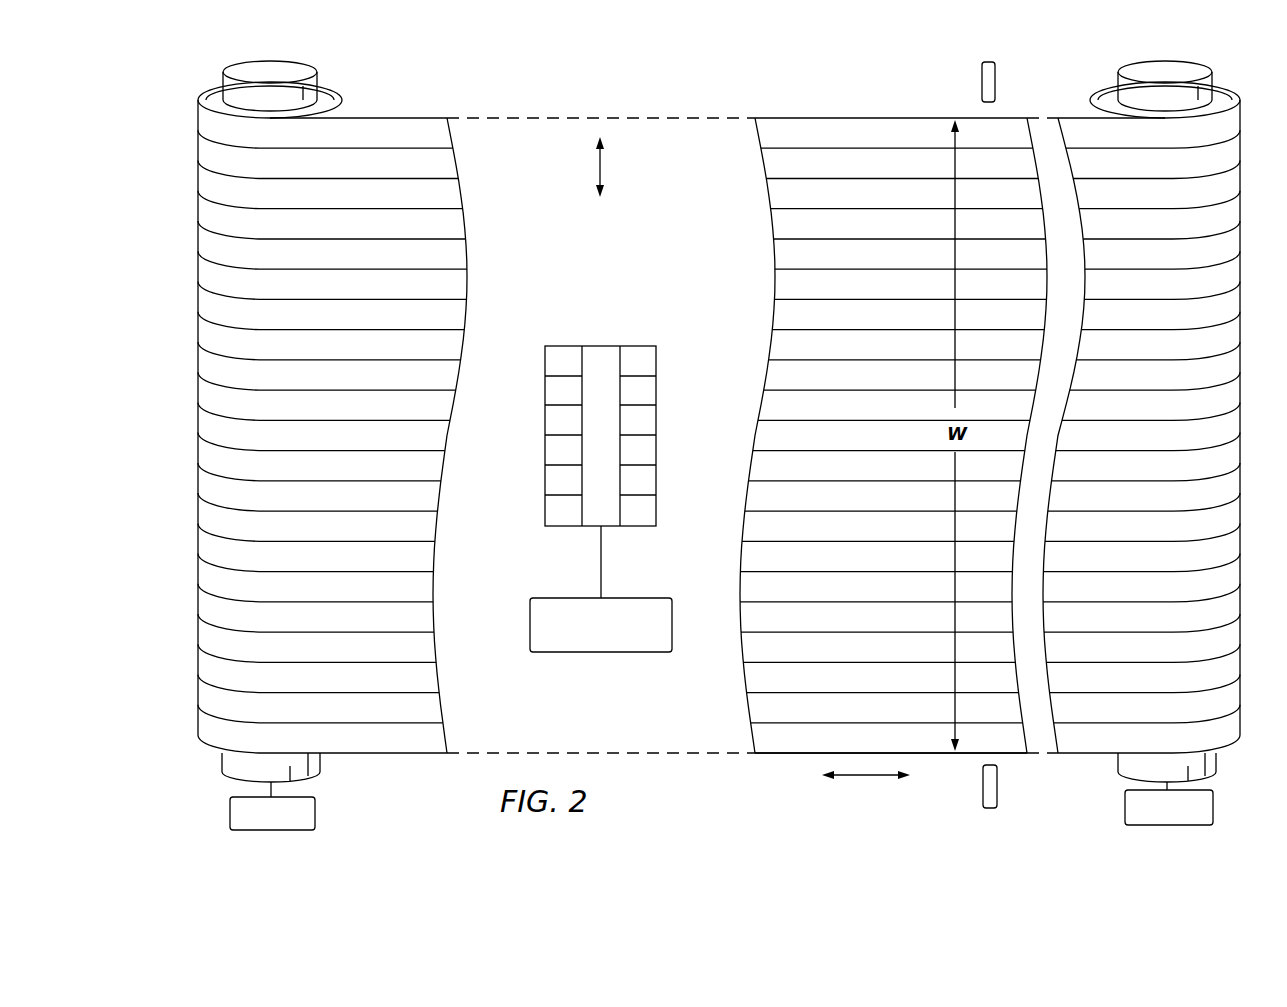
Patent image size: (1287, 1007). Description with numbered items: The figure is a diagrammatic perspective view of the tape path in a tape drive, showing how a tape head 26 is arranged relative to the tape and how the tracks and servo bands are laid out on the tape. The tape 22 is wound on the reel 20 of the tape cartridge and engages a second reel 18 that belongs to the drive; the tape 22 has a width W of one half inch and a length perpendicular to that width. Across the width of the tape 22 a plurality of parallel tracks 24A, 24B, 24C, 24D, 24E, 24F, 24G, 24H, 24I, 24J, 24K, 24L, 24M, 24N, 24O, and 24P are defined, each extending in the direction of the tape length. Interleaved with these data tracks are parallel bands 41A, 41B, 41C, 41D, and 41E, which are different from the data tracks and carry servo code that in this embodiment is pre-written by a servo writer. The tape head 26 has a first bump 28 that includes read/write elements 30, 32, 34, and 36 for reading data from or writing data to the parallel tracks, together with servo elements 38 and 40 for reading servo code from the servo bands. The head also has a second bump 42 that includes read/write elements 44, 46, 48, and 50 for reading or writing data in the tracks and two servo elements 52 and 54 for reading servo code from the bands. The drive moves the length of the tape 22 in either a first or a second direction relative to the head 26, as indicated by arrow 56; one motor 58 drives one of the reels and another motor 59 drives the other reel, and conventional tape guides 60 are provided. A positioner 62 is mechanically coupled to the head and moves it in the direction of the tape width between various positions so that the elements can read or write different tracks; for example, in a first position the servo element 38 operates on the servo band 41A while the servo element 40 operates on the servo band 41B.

The second reel 18 is at (318, 73).
The reel 20 is at (1212, 70).
The tape 22 is at (370, 757).
The parallel track 24A is at (902, 166).
The parallel track 24B is at (907, 196).
The parallel track 24C is at (910, 226).
The parallel track 24D is at (911, 256).
The parallel track 24E is at (908, 316).
The parallel track 24F is at (905, 347).
The parallel track 24G is at (900, 377).
The parallel track 24H is at (894, 407).
The parallel track 24I is at (885, 468).
The parallel track 24J is at (881, 498).
The parallel track 24K is at (878, 528).
The parallel track 24L is at (876, 558).
The parallel track 24M is at (877, 619).
The parallel track 24N is at (879, 649).
The parallel track 24O is at (883, 679).
The parallel track 24P is at (887, 710).
The tape head 26 is at (610, 419).
The first bump 28 is at (532, 441).
The read/write element 30 is at (556, 393).
The read/write element 32 is at (556, 423).
The read/write element 34 is at (556, 453).
The read/write element 36 is at (556, 483).
The servo element 38 is at (556, 364).
The servo element 40 is at (556, 513).
The servo band 41A is at (897, 135).
The servo band 41B is at (911, 286).
The servo band 41C is at (889, 437).
The servo band 41D is at (876, 589).
The servo band 41E is at (891, 740).
The second bump 42 is at (679, 419).
The read/write element 44 is at (645, 392).
The read/write element 46 is at (645, 422).
The read/write element 48 is at (645, 452).
The read/write element 50 is at (645, 482).
The servo element 52 is at (645, 362).
The servo element 54 is at (645, 512).
The arrow 56 is at (862, 780).
The motor 58 is at (1215, 808).
The motor 59 is at (320, 813).
The tape guide 60 is at (978, 77).
The positioner 62 is at (530, 626).